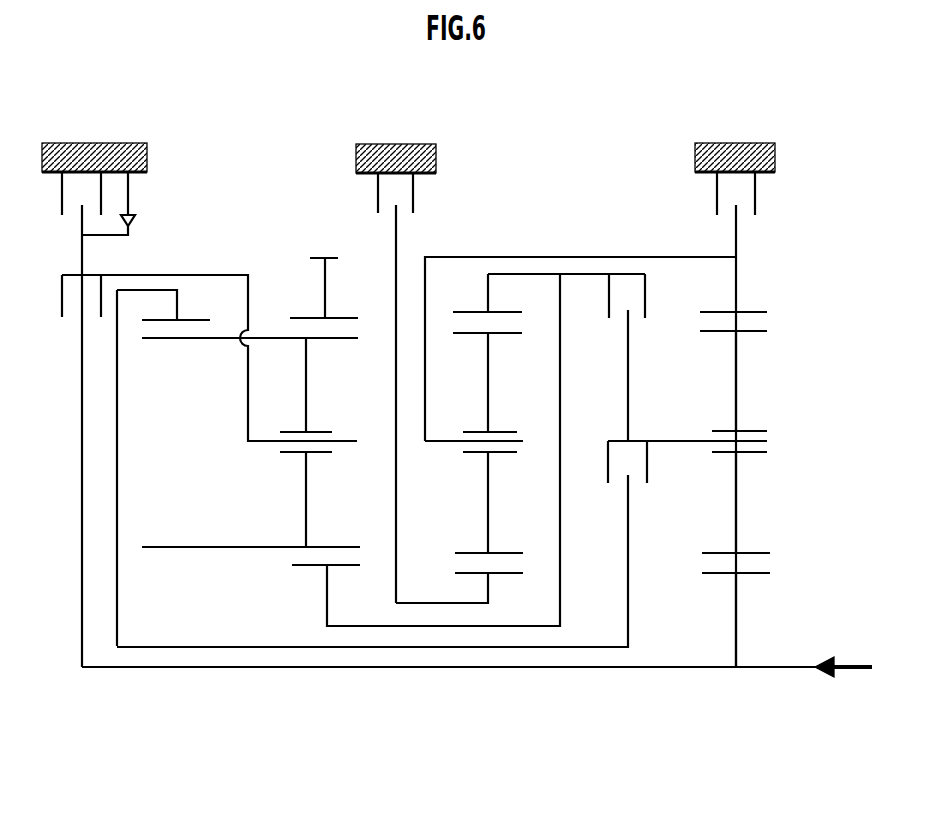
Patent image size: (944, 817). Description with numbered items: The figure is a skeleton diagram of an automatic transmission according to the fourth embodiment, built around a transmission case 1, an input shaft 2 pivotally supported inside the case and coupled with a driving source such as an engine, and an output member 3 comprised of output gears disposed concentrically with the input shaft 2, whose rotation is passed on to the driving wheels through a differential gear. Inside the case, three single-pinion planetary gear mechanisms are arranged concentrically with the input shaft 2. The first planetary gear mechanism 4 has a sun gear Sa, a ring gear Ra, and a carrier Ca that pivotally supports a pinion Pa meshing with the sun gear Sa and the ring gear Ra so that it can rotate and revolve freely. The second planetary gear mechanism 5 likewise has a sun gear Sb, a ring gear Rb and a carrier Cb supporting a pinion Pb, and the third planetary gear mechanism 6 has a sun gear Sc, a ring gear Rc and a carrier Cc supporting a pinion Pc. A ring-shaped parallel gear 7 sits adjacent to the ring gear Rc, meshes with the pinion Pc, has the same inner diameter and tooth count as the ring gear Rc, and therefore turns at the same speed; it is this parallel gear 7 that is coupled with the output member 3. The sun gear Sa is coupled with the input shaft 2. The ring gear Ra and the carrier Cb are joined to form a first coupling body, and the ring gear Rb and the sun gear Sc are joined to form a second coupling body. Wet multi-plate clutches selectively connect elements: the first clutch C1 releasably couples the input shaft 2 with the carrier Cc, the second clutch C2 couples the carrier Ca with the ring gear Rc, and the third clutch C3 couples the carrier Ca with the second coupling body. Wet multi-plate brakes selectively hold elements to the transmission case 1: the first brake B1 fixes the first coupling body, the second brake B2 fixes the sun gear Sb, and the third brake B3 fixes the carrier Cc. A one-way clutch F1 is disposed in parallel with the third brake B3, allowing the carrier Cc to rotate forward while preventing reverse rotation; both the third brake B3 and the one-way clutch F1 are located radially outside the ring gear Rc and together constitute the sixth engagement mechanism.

The transmission case 1 is at (96, 143).
The input shaft 2 is at (787, 669).
The output member 3 is at (318, 256).
The first planetary gear mechanism 4 is at (758, 390).
The second planetary gear mechanism 5 is at (472, 387).
The third planetary gear mechanism 6 is at (287, 515).
The parallel gear 7 is at (355, 322).
The first brake B1 is at (736, 419).
The second brake B2 is at (395, 388).
The third brake B3 is at (81, 419).
The first clutch C1 is at (209, 358).
The second clutch C2 is at (442, 544).
The third clutch C3 is at (566, 357).
The 1-way clutch F1 is at (137, 222).
The ring gear Ra is at (762, 313).
The pinion Pa is at (715, 554).
The sun gear Sa is at (760, 572).
The carrier Ca is at (675, 443).
The ring gear Rb is at (465, 313).
The pinion Pb is at (510, 331).
The sun gear Sb is at (510, 573).
The carrier Cb is at (437, 443).
The ring gear Rc is at (154, 322).
The pinion Pc is at (350, 547).
The sun gear Sc is at (293, 563).
The carrier Cc is at (255, 443).